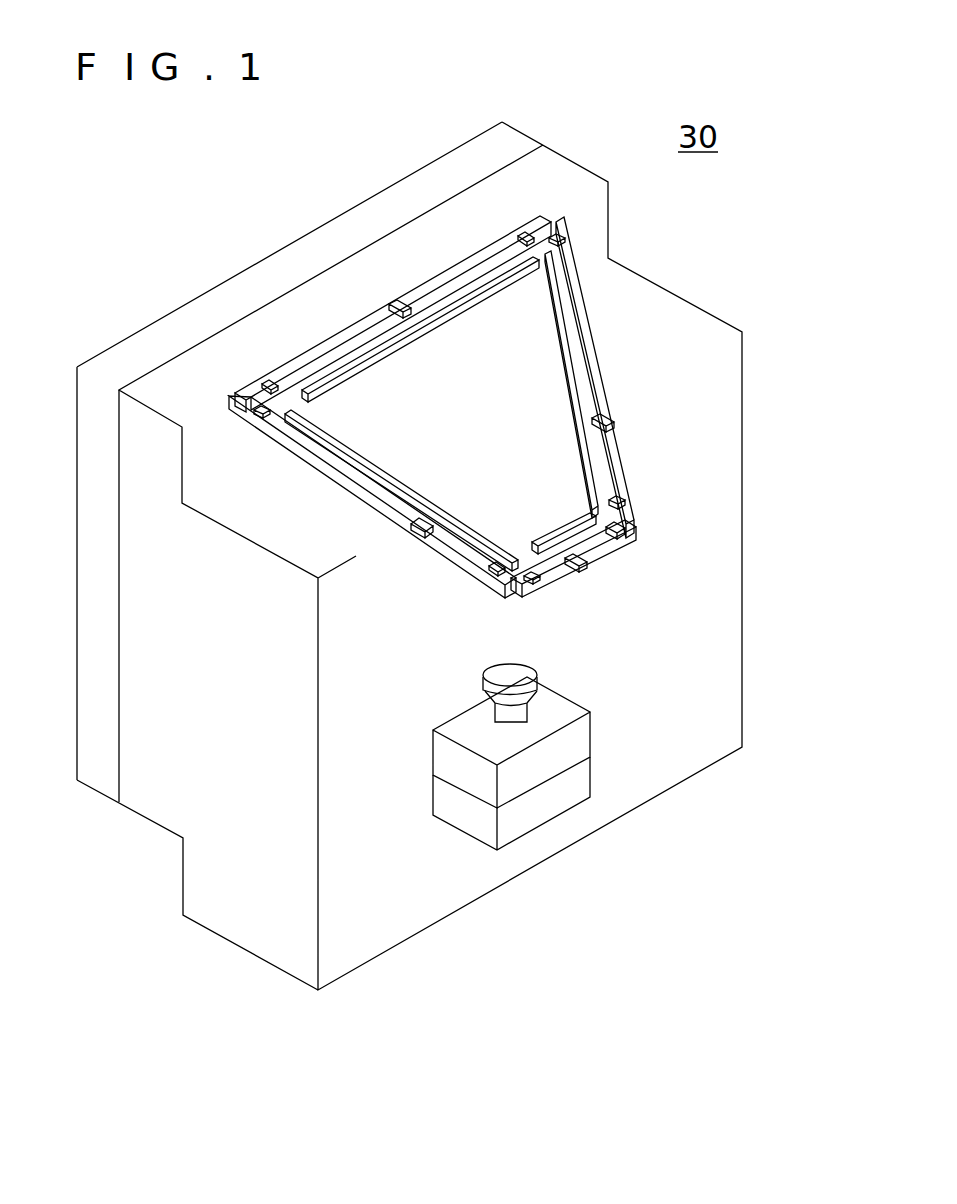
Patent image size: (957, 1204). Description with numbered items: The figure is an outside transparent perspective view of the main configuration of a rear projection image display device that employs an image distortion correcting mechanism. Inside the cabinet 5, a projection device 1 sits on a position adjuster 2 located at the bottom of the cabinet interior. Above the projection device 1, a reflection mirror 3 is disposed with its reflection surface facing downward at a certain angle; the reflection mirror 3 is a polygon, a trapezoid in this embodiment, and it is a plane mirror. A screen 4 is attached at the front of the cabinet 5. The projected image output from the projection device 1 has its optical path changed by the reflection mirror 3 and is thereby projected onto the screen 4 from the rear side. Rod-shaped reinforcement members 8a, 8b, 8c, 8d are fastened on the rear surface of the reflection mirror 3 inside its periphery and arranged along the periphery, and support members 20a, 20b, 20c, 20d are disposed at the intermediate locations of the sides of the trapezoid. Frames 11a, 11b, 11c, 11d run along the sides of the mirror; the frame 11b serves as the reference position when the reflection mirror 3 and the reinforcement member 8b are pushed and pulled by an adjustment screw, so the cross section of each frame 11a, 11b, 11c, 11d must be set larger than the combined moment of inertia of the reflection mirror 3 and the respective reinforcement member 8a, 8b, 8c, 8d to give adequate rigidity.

The projection device 1 is at (568, 752).
The position adjuster 2 is at (527, 813).
The reflection mirror 3 is at (495, 385).
The screen 4 is at (78, 567).
The cabinet 5 is at (745, 535).
The reinforcement member 8a is at (378, 343).
The reinforcement member 8b is at (317, 430).
The reinforcement member 8c is at (607, 547).
The reinforcement member 8d is at (570, 348).
The frame 11a is at (317, 345).
The frame 11b is at (333, 488).
The frame 11c is at (552, 587).
The frame 11d is at (628, 455).
The support member 20a is at (397, 300).
The support member 20b is at (421, 540).
The support member 20c is at (582, 568).
The support member 20d is at (614, 416).